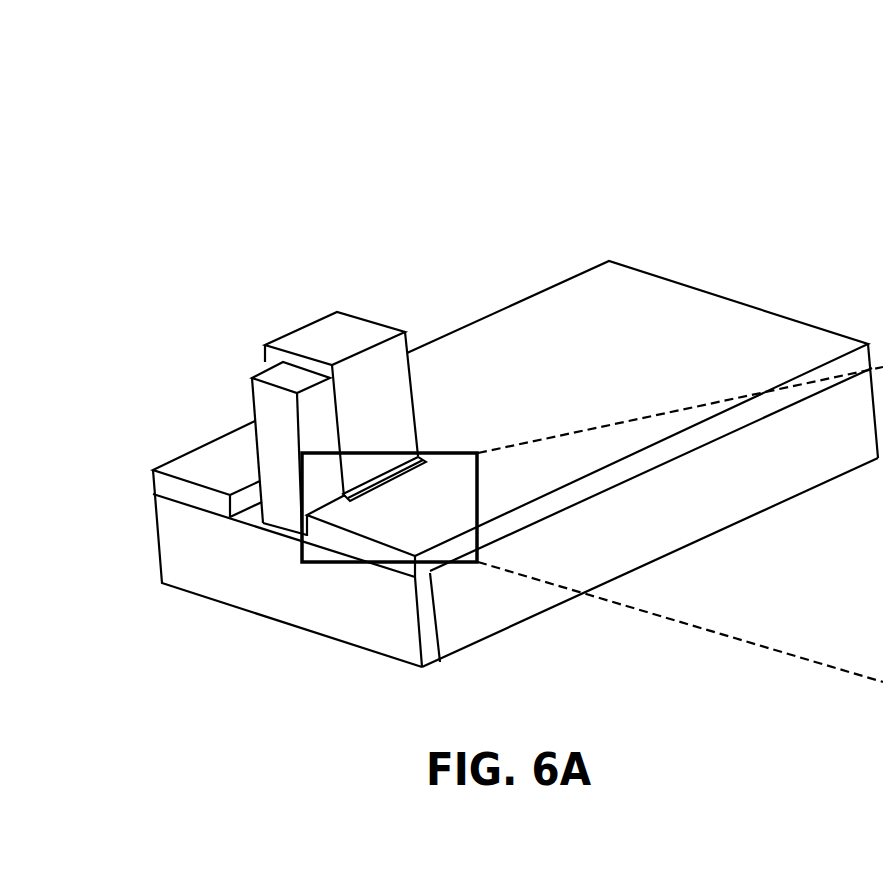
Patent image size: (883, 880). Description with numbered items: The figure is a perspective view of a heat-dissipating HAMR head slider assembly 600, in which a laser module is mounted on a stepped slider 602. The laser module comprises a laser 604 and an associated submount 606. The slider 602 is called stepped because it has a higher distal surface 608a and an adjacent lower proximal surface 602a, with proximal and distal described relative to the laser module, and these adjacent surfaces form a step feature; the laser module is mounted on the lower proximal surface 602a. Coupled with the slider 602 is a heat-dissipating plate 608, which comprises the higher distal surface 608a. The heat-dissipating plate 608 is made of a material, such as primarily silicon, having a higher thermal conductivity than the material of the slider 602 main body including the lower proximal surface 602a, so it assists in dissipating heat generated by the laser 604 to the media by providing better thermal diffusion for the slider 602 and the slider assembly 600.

The HAMR head slider assembly 600 is at (402, 172).
The slider 602 is at (173, 553).
The lower proximal surface 602a is at (253, 508).
The laser 604 is at (262, 415).
The submount 606 is at (326, 338).
The heat-dissipating plate 608 is at (668, 315).
The higher distal surface 608a is at (597, 372).